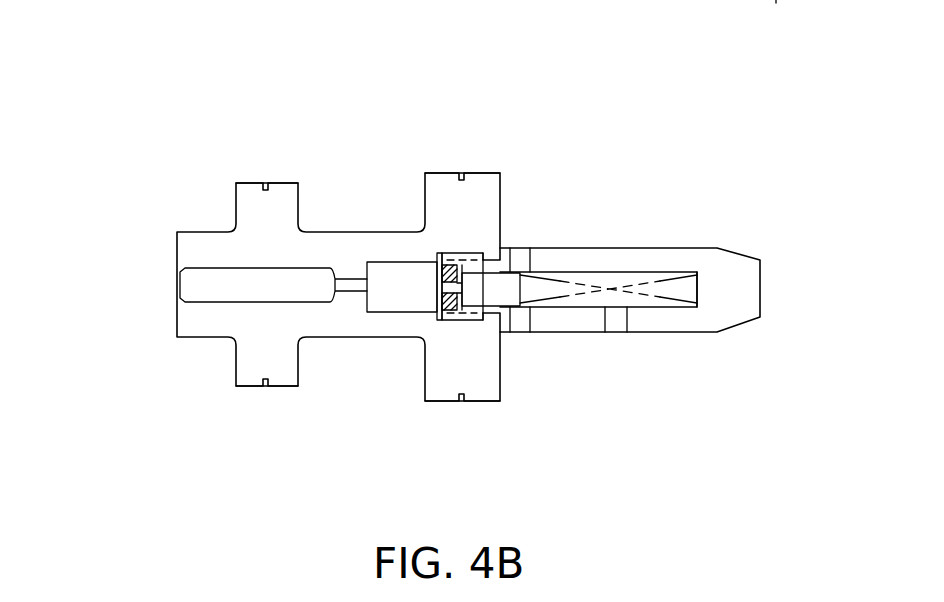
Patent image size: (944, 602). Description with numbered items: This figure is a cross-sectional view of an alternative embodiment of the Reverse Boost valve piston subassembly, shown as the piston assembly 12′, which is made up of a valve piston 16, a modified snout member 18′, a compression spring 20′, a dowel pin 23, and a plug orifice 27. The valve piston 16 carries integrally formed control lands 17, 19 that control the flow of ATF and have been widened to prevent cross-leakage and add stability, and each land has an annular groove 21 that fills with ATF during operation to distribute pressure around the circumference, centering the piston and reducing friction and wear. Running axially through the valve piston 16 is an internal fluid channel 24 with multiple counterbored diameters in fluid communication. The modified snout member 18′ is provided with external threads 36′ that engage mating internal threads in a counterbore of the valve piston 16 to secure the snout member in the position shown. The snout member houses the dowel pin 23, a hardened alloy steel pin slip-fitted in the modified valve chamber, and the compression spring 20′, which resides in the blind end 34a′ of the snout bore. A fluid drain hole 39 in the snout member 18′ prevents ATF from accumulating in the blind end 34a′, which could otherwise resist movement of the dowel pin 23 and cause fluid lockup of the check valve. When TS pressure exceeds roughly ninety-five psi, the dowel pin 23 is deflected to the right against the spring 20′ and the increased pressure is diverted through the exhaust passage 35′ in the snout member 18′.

The piston assembly 12′ is at (578, 90).
The valve piston 16 is at (276, 343).
The control land 17 is at (248, 388).
The modified snout member 18′ is at (745, 305).
The control land 19 is at (445, 402).
The compression spring 20′ is at (614, 290).
The annular groove 21 is at (267, 182).
The dowel pin 23 is at (500, 302).
The internal fluid channel 24 is at (177, 283).
The plug orifice 27 is at (442, 292).
The blind end of bore 34a′ is at (700, 288).
The exhaust passage 35′ is at (520, 252).
The external threads 36′ is at (488, 260).
The fluid drain hole 39 is at (613, 326).